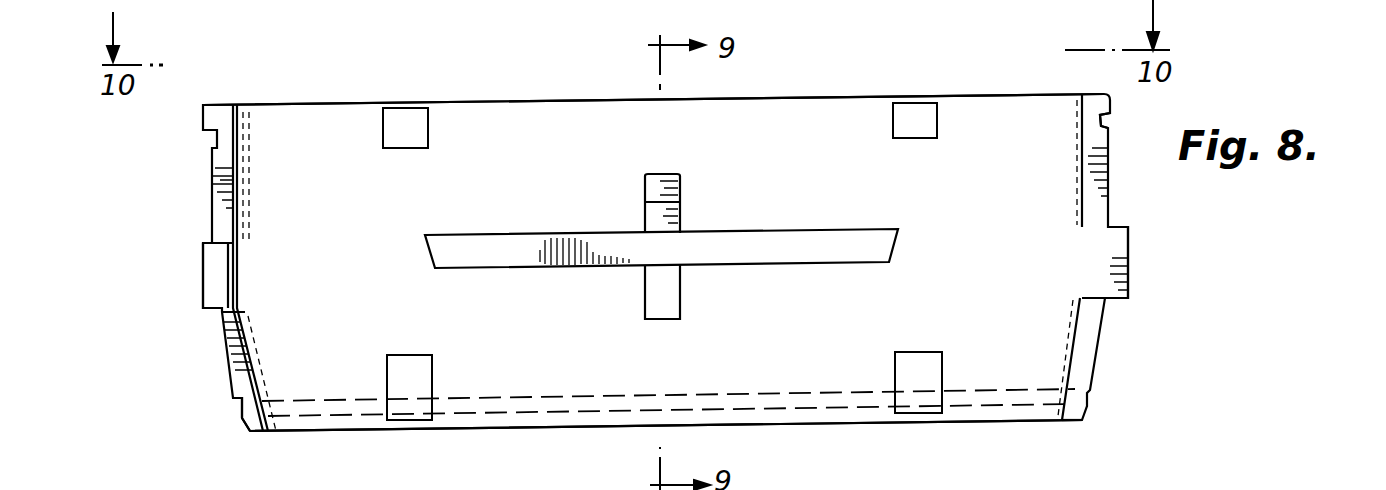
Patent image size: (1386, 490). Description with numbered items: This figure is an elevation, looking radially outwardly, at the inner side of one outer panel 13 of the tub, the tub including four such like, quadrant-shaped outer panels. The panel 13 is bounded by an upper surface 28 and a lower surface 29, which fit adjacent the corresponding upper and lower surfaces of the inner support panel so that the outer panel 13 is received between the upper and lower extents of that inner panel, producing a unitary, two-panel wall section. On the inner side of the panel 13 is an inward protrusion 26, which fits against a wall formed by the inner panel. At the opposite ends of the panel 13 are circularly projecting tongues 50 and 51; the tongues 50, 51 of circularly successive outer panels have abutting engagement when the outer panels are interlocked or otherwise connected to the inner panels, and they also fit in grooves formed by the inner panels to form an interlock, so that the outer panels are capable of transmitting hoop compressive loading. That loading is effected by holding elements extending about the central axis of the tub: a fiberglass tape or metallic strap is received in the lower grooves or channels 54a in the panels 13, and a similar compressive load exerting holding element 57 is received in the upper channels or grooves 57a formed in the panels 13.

The outer panel 13 is at (785, 88).
The upper surface 28 is at (487, 100).
The lower surface 29 is at (452, 430).
The inward protrusion 26 is at (735, 248).
The tongue 50 is at (215, 270).
The tongue 51 is at (1130, 265).
The upper channel 57a is at (1100, 130).
The lower channel 54a is at (238, 402).
The holding element 57 is at (1173, 455).